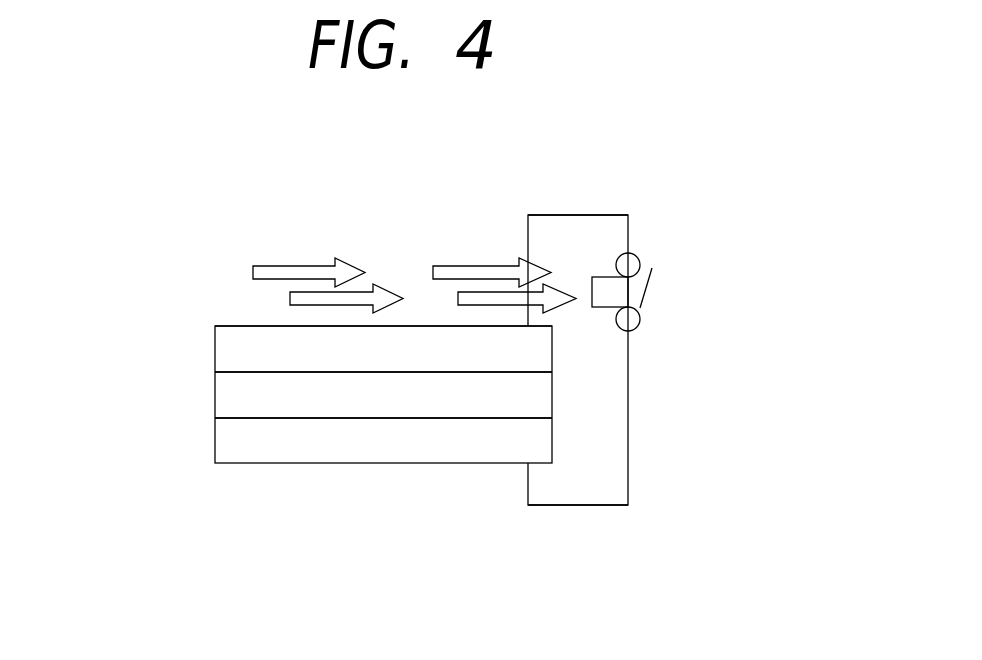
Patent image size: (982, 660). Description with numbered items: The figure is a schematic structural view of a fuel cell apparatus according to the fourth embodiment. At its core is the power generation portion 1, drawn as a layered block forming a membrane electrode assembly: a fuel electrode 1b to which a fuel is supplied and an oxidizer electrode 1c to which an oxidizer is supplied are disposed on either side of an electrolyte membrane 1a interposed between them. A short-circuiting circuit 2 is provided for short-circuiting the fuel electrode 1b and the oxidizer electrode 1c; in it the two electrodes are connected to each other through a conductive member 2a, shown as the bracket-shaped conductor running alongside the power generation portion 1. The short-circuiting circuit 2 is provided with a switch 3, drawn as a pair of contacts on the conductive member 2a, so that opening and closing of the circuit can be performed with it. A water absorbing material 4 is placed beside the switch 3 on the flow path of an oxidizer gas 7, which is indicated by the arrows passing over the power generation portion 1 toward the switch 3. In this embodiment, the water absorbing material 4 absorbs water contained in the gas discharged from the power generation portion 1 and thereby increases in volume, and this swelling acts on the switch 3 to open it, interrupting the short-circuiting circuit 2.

The power generation portion 1 is at (182, 397).
The electrolyte membrane 1a is at (279, 398).
The fuel electrode 1b is at (367, 452).
The oxidizer electrode 1c is at (233, 335).
The short-circuiting circuit 2 is at (626, 192).
The conductive member 2a is at (582, 215).
The switch 3 is at (643, 292).
The water absorbing material 4 is at (602, 305).
The oxidizer gas 7 is at (310, 273).